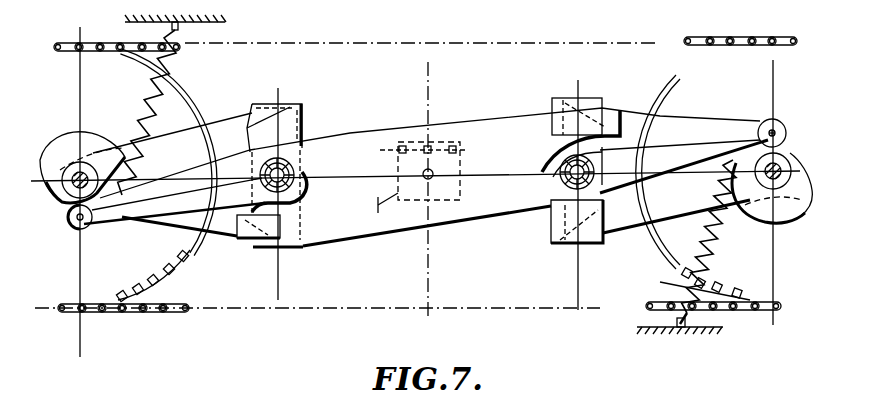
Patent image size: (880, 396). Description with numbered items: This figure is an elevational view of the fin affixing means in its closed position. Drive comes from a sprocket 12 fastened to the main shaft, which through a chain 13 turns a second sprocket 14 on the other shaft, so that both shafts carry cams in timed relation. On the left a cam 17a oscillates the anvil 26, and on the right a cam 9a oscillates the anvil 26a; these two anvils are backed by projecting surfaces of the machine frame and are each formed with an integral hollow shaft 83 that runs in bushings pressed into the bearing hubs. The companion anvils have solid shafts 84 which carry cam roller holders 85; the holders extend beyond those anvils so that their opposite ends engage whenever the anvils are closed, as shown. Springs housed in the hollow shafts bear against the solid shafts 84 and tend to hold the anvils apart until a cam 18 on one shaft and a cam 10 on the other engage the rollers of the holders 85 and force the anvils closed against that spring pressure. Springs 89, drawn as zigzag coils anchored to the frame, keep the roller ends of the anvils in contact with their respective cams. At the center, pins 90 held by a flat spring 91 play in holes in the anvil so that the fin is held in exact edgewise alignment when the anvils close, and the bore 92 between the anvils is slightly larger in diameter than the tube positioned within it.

The cam 17a is at (65, 148).
The sprocket 14 is at (93, 100).
The springs 89 is at (174, 60).
The anvil 26 is at (315, 152).
The anvil 26a is at (527, 216).
The solid shafts 84 is at (297, 172).
The hollow shafts 83 is at (305, 190).
The cam roller holders 85 is at (272, 249).
The pins 90 is at (402, 146).
The flat spring 91 is at (432, 142).
The bore 92 is at (430, 180).
The sprocket 12 is at (717, 90).
The cam 9a is at (789, 216).
The cam 18 is at (228, 222).
The chain 13 is at (177, 318).
The cam 10 is at (646, 242).